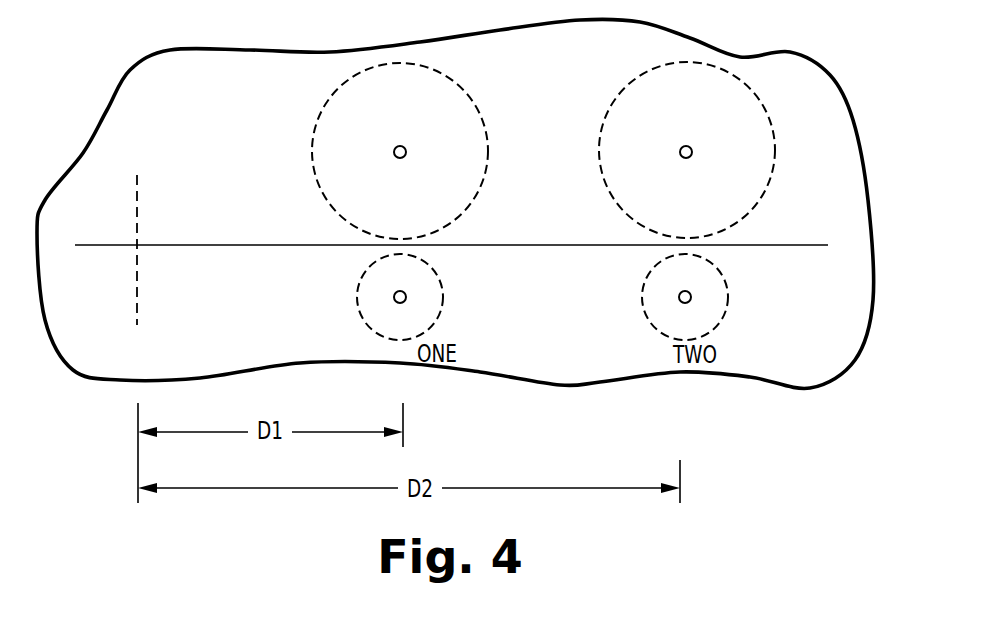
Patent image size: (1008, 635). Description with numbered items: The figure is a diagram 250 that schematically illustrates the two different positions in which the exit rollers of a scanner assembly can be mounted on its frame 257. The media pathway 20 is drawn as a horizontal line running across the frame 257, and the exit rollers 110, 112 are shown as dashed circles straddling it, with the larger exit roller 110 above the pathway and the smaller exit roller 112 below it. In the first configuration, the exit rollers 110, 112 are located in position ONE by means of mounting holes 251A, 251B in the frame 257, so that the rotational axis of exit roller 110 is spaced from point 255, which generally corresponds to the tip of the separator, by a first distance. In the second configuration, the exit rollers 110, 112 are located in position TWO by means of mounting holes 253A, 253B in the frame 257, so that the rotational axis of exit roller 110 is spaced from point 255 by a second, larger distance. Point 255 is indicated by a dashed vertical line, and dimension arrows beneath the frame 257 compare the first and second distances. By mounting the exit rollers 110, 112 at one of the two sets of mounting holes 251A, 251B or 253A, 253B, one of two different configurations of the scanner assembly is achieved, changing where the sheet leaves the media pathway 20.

The diagram 250 is at (82, 113).
The media pathway 20 is at (451, 210).
The point 255 is at (137, 265).
The exit roller 110 is at (457, 82).
The frame 257 is at (561, 91).
The mounting hole 251A is at (401, 158).
The mounting hole 253A is at (686, 146).
The exit roller 112 is at (443, 297).
The mounting hole 251B is at (394, 296).
The mounting hole 253B is at (679, 296).